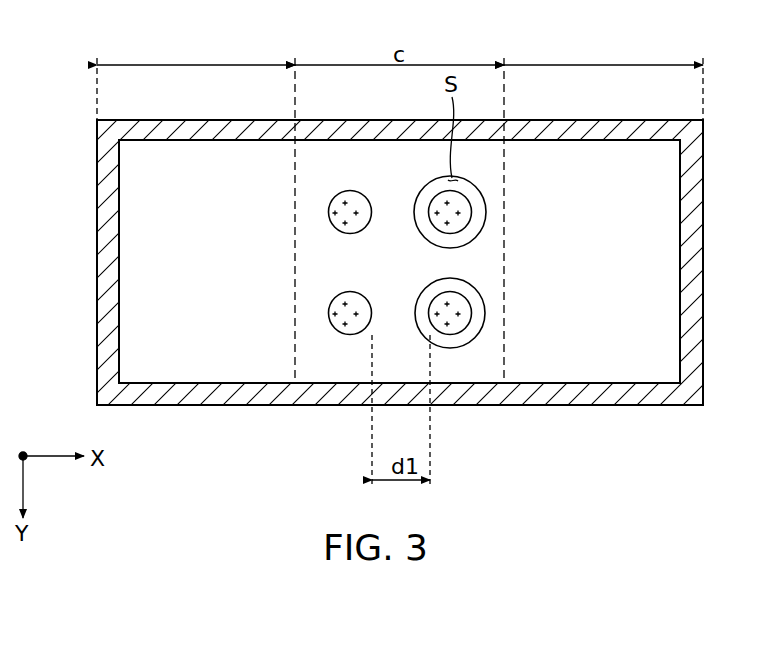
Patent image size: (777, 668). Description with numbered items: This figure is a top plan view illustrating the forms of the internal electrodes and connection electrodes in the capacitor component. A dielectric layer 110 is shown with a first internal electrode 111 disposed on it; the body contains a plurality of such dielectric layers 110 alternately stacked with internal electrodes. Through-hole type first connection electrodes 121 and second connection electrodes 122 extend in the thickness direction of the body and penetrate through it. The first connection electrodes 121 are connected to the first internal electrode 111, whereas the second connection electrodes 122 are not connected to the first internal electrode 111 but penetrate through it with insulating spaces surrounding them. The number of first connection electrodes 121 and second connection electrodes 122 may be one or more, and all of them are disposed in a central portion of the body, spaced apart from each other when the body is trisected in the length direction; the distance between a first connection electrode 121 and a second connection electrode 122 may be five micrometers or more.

The dielectric layer 110 is at (108, 191).
The first internal electrode 111 is at (137, 248).
The first connection electrode 121 is at (349, 335).
The second connection electrode 122 is at (447, 337).